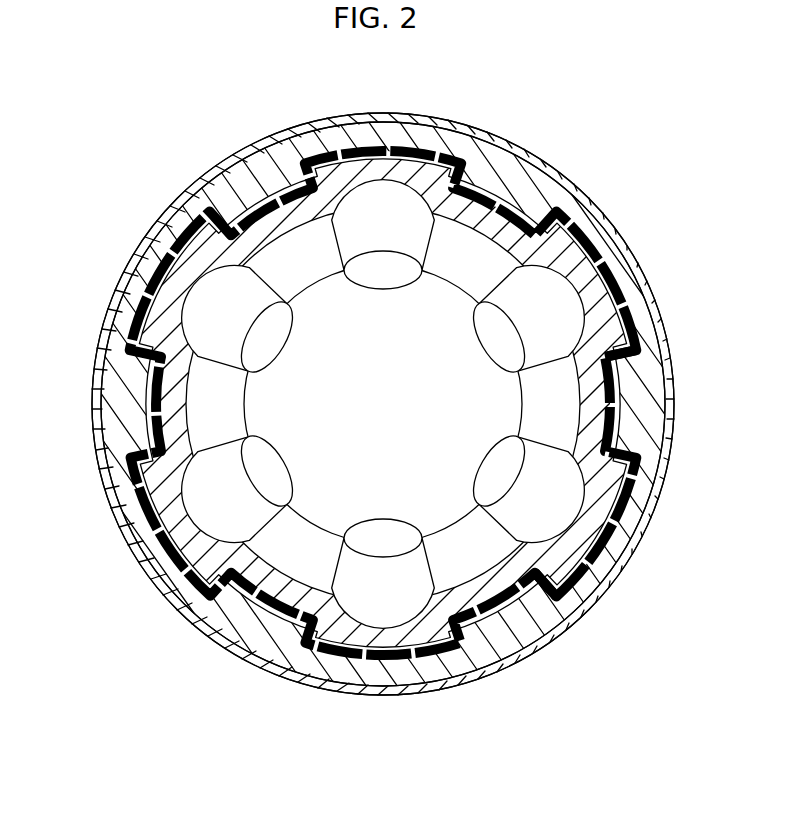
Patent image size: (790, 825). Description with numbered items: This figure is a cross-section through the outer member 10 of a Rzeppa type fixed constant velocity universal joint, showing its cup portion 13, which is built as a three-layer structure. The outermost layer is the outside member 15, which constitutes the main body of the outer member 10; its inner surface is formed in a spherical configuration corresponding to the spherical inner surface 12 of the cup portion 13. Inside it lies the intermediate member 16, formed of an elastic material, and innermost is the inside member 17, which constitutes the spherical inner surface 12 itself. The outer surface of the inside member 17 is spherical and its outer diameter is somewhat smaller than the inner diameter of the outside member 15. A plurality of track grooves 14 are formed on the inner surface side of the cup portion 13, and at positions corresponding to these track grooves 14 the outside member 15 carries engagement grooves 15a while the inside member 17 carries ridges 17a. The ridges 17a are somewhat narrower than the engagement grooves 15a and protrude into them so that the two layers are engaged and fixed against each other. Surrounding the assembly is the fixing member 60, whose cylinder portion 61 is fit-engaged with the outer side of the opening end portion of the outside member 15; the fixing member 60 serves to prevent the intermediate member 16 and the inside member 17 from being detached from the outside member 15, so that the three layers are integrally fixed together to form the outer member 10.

The outer member 10 is at (144, 169).
The spherical inner surface 12 is at (560, 408).
The cup portion 13 is at (92, 362).
The track grooves 14 is at (569, 297).
The outside member 15 is at (243, 172).
The engagement grooves 15a is at (590, 272).
The intermediate member 16 is at (152, 236).
The inside member 17 is at (170, 300).
The ridges 17a is at (645, 348).
The fixing member 60 is at (573, 176).
The cylinder portion 61 is at (490, 130).